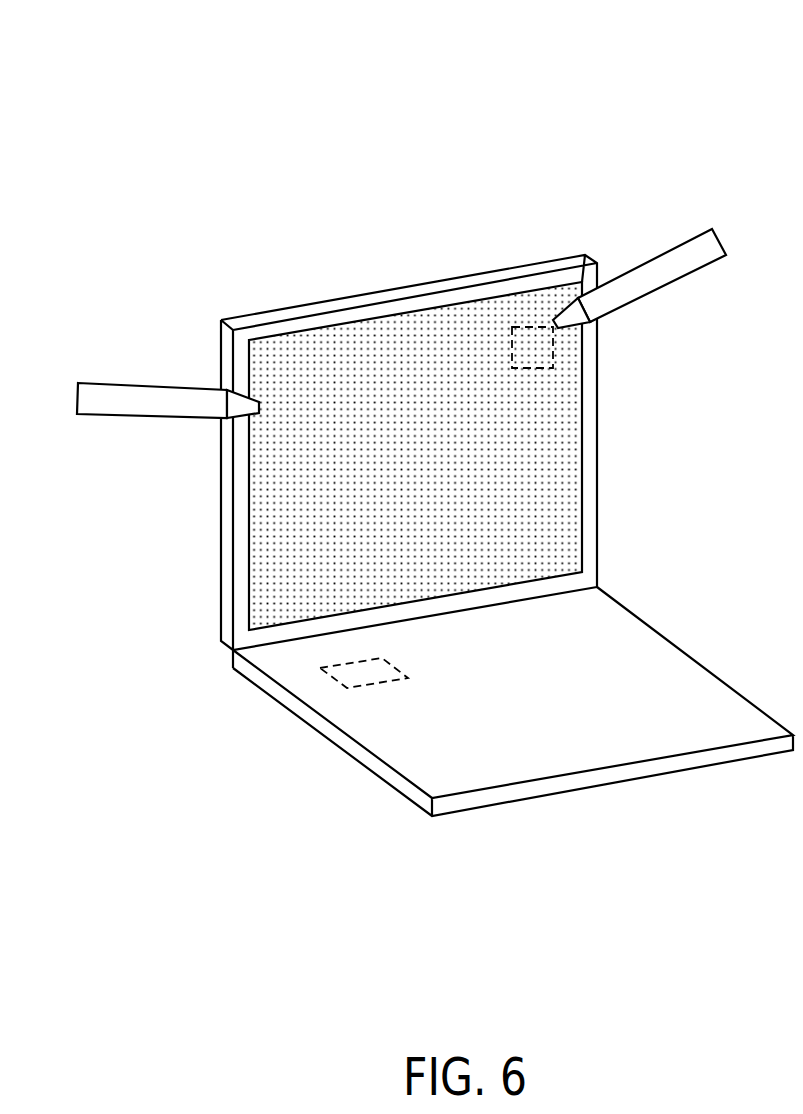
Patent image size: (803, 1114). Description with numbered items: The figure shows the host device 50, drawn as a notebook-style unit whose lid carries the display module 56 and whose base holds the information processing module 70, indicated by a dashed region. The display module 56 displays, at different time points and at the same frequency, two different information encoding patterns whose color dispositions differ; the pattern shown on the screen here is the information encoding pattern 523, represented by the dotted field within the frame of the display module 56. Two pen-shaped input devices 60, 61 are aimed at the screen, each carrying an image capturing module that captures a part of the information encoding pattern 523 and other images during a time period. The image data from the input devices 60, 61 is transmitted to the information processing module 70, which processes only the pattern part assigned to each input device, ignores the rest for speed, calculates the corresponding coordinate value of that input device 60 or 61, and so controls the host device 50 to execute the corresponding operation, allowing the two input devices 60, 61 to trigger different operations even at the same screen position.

The host device 50 is at (435, 442).
The display module 56 is at (350, 302).
The information encoding pattern 523 is at (462, 302).
The input device 60 is at (135, 382).
The input device 61 is at (687, 276).
The information processing module 70 is at (335, 678).